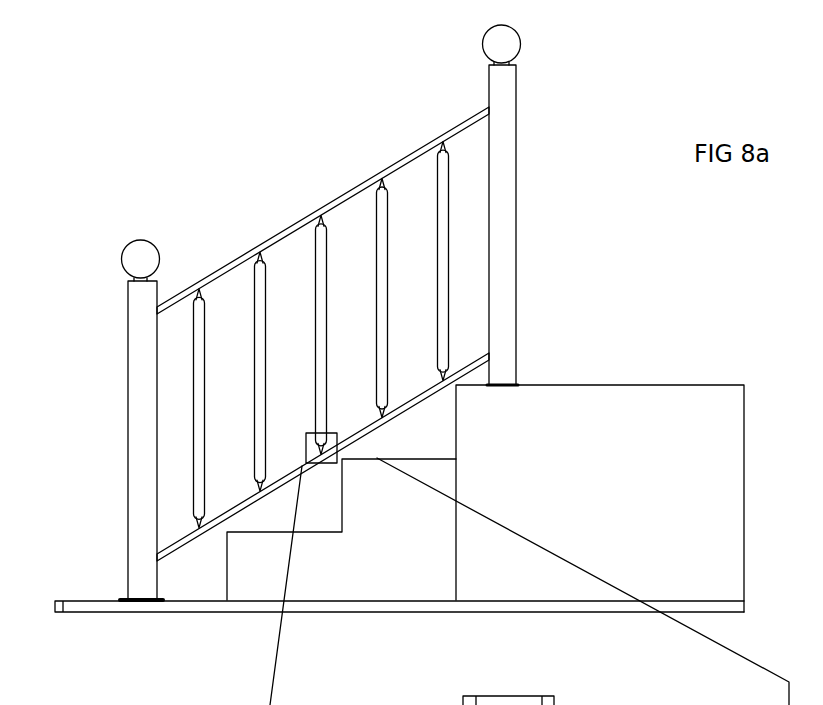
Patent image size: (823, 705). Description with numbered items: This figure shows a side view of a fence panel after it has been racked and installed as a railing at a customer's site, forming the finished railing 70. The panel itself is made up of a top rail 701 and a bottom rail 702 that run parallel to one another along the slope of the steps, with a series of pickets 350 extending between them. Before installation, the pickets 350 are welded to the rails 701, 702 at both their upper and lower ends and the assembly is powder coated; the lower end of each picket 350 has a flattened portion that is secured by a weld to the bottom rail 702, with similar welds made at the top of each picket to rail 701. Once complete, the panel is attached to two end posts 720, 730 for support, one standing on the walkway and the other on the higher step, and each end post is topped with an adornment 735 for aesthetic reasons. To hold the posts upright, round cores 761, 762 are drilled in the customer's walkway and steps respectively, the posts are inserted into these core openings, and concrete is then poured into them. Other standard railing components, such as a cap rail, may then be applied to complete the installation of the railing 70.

The finished railing 70 is at (290, 140).
The top rail 701 is at (286, 228).
The bottom rail 702 is at (192, 540).
The picket 350 is at (257, 320).
The end post 720 is at (128, 434).
The end post 730 is at (516, 210).
The adornment 735 is at (519, 47).
The round core 761 is at (123, 598).
The round core 762 is at (523, 385).